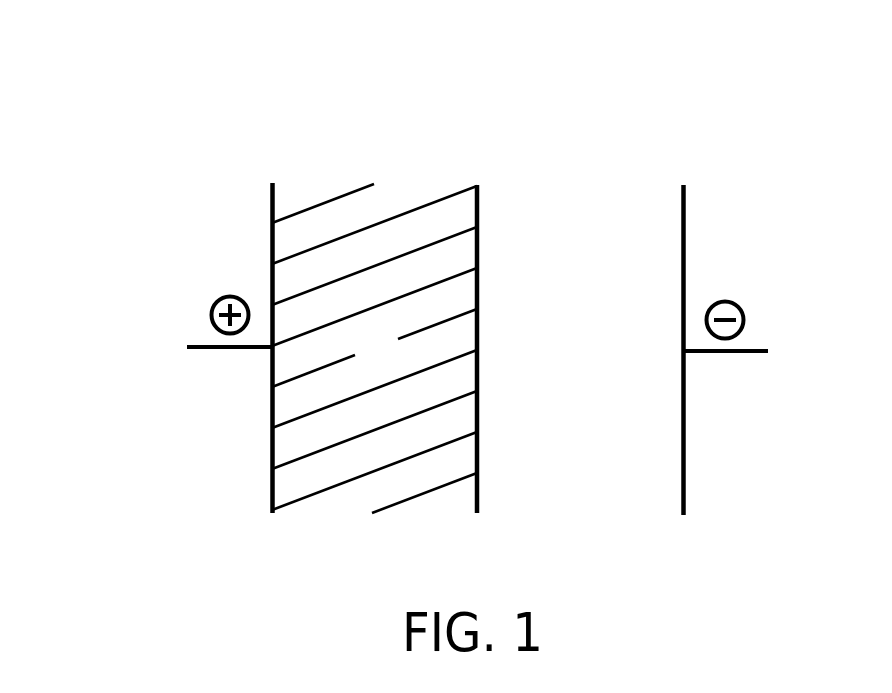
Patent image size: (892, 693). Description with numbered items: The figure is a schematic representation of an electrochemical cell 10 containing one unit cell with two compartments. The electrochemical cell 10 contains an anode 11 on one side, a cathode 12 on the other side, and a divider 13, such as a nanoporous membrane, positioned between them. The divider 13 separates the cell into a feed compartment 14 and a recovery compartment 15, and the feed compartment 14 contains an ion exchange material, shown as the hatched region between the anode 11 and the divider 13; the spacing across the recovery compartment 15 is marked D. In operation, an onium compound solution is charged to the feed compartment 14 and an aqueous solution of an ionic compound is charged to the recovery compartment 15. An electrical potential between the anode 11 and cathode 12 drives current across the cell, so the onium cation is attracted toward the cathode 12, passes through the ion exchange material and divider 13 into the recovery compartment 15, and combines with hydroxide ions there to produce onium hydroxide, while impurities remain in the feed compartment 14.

The electrochemical cell 10 is at (244, 102).
The anode 11 is at (240, 329).
The cathode 12 is at (718, 333).
The divider 13 is at (479, 330).
The feed compartment 14 is at (374, 348).
The recovery compartment 15 is at (581, 351).
The gap distance D is at (476, 542).